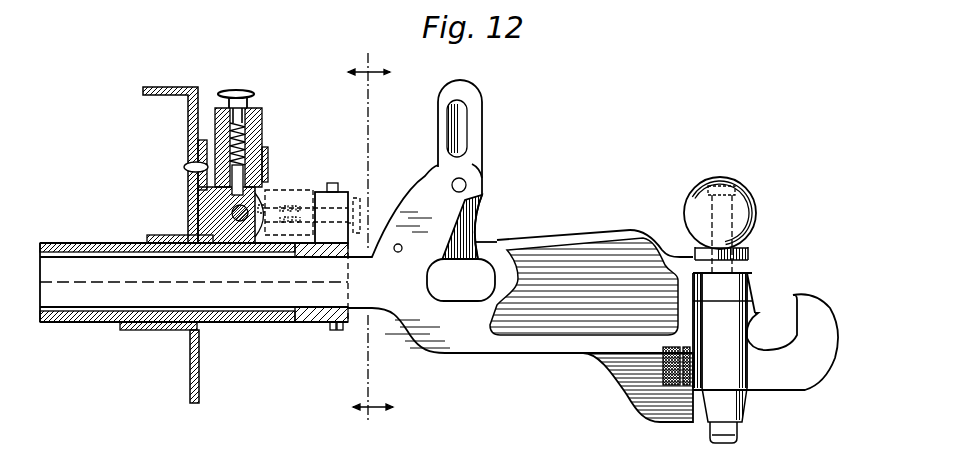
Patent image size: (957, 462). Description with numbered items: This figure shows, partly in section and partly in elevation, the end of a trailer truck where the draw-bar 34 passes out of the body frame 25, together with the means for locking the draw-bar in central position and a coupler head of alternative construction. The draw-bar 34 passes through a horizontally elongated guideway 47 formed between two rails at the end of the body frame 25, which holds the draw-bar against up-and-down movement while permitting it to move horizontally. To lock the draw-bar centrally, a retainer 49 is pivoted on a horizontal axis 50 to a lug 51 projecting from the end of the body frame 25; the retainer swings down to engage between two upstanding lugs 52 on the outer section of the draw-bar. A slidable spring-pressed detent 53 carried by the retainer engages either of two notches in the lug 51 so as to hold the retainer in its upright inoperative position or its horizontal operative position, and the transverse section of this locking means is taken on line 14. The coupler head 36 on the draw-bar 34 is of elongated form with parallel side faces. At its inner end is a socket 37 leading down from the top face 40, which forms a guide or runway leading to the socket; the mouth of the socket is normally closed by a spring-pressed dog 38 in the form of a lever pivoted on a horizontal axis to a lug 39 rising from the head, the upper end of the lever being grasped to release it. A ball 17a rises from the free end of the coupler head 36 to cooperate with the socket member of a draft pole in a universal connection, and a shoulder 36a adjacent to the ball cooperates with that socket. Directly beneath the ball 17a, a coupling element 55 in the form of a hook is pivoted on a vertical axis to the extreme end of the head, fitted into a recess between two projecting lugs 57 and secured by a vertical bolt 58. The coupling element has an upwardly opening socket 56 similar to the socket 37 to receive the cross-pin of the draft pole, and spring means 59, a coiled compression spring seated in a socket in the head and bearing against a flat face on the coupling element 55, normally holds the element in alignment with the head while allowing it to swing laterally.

The section line 14— 14 is at (370, 234).
The ball 17a is at (727, 177).
The body frame 25 is at (159, 86).
The draw-bar 34 is at (98, 297).
The coupler head 36 is at (591, 330).
The shoulder 36a is at (669, 240).
The socket 37 is at (461, 280).
The spring-pressed dog 38 is at (465, 137).
The lug 39 is at (425, 190).
The top face 40 is at (563, 235).
The guideway 47 is at (161, 235).
The retainer 49 is at (262, 138).
The horizontal axis 50 is at (262, 193).
The lug 51 is at (187, 183).
The upstanding lugs 52 is at (322, 187).
The spring-pressed detent 53 is at (254, 93).
The coupling element 55 is at (798, 370).
The socket 56 is at (770, 325).
The projecting lugs 57 is at (748, 270).
The vertical bolt 58 is at (693, 301).
The spring means 59 is at (702, 395).